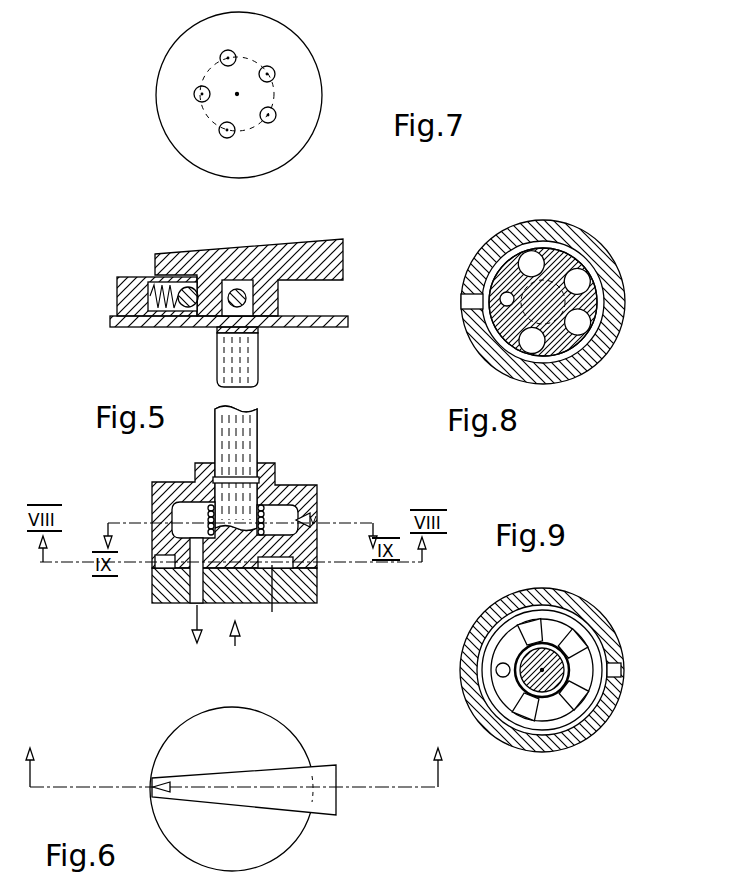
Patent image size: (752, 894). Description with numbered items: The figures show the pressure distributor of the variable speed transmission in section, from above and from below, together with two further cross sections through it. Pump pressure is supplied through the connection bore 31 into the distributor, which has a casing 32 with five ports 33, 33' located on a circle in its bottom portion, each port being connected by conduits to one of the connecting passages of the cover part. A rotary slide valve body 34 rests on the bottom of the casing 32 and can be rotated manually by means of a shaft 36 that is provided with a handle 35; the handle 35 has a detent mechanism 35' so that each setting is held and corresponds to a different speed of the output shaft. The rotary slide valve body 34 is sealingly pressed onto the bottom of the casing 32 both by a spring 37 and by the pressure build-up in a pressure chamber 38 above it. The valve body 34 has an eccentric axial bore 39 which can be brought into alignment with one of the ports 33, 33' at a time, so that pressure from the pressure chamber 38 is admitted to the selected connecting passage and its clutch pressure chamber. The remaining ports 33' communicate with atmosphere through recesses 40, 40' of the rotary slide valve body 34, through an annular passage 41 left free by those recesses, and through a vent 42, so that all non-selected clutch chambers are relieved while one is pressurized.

In FIG. 5, the connection bore 31 is at (318, 510).
In FIG. 9, the connection bore 31 is at (615, 670).
In FIG. 7, the casing 32 is at (315, 105).
In FIG. 5, the casing 32 is at (305, 598).
In FIG. 7, the port 33 is at (249, 44).
In FIG. 5, the port 33 is at (160, 583).
In FIG. 7, the port 33' is at (315, 64).
In FIG. 5, the rotary slide valve body 34 is at (293, 550).
In FIG. 8, the rotary slide valve body 34 is at (590, 300).
In FIG. 9, the rotary slide valve body 34 is at (557, 620).
In FIG. 5, the handle 35 is at (269, 277).
In FIG. 6, the handle 35 is at (253, 768).
In FIG. 5, the detent mechanism 35' is at (177, 323).
In FIG. 5, the shaft 36 is at (258, 360).
In FIG. 5, the spring 37 is at (280, 498).
In FIG. 5, the pressure chamber 38 is at (187, 510).
In FIG. 5, the eccentric axial bore 39 is at (176, 516).
In FIG. 8, the eccentric axial bore 39 is at (502, 305).
In FIG. 9, the eccentric axial bore 39 is at (497, 672).
In FIG. 5, the recess 40 is at (282, 602).
In FIG. 8, the recess 40 is at (585, 288).
In FIG. 9, the recess 40 is at (578, 658).
In FIG. 8, the recess 40' is at (537, 233).
In FIG. 9, the recess 40' is at (522, 599).
In FIG. 5, the annular passage 41 is at (297, 566).
In FIG. 8, the annular passage 41 is at (600, 325).
In FIG. 5, the vent 42 is at (163, 562).
In FIG. 8, the vent 42 is at (468, 299).